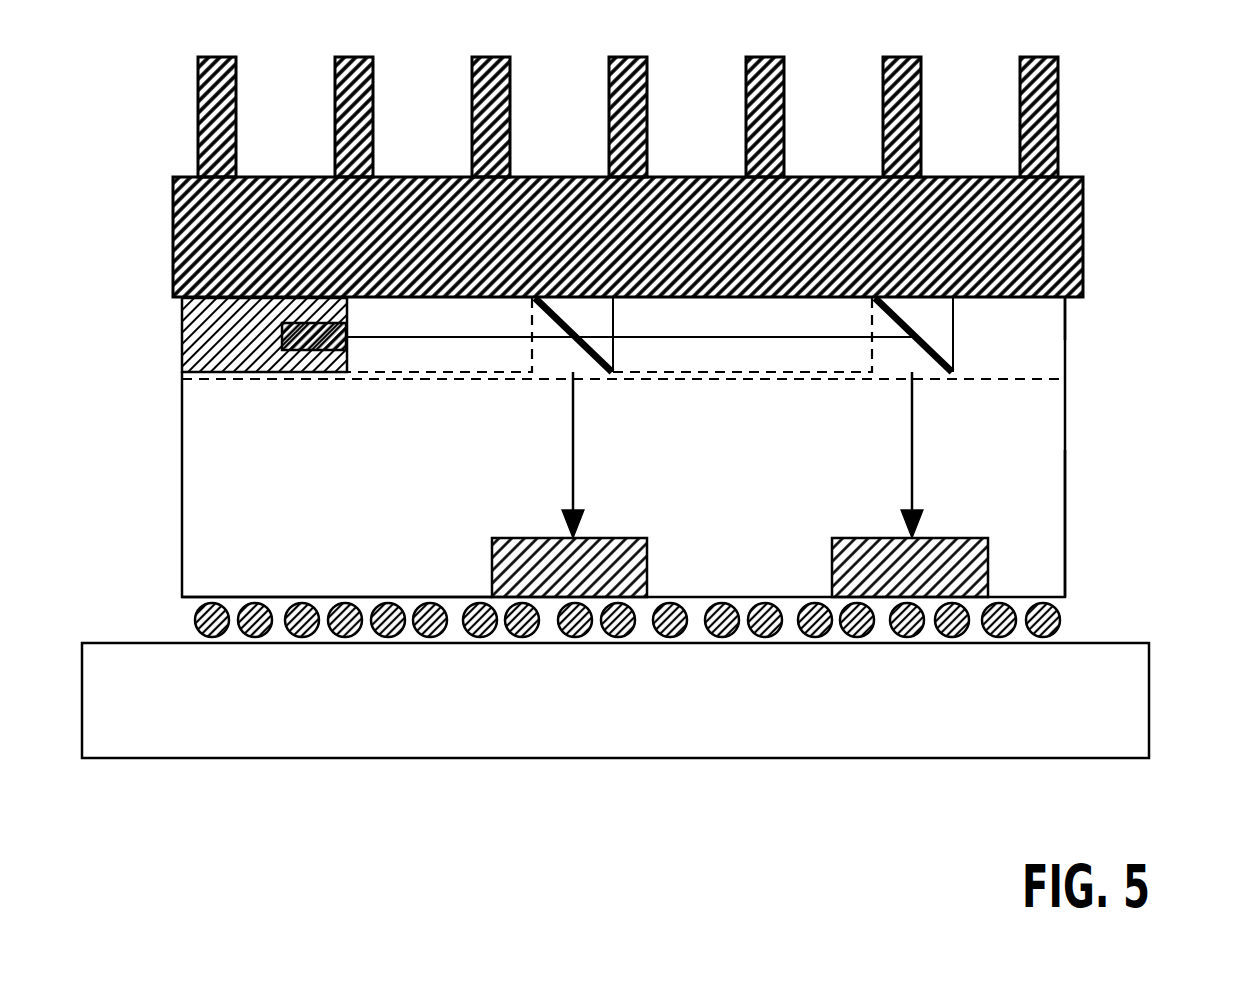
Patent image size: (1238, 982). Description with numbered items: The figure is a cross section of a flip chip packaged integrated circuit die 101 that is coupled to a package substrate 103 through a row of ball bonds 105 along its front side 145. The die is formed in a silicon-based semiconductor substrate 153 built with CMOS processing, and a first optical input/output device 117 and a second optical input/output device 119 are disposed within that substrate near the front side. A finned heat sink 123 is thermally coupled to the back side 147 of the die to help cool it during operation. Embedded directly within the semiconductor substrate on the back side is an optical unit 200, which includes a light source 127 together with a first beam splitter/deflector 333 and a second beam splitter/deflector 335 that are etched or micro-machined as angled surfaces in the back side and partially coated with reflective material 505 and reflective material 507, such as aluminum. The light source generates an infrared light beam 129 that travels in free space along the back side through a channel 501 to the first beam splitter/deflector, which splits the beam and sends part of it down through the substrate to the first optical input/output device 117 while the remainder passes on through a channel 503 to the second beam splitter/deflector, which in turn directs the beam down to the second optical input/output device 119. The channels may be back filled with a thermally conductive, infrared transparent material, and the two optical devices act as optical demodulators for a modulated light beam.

The heat sink 123 is at (1085, 217).
The light source 127 is at (182, 332).
The light beam 129 is at (380, 338).
The channel 501 is at (477, 360).
The channel 503 is at (742, 362).
The reflective material 505 is at (592, 315).
The reflective material 507 is at (932, 330).
The first beam splitter/deflector 333 is at (593, 367).
The second beam splitter/deflector 335 is at (935, 373).
The optical unit 200 is at (1053, 360).
The integrated circuit die 101 is at (1048, 415).
The back side 147 is at (1073, 302).
The semiconductor substrate 153 is at (1038, 483).
The first optical input/output device 117 is at (503, 538).
The second optical input/output device 119 is at (837, 540).
The front side 145 is at (295, 597).
The ball bonds 105 is at (1067, 613).
The package substrate 103 is at (1130, 697).